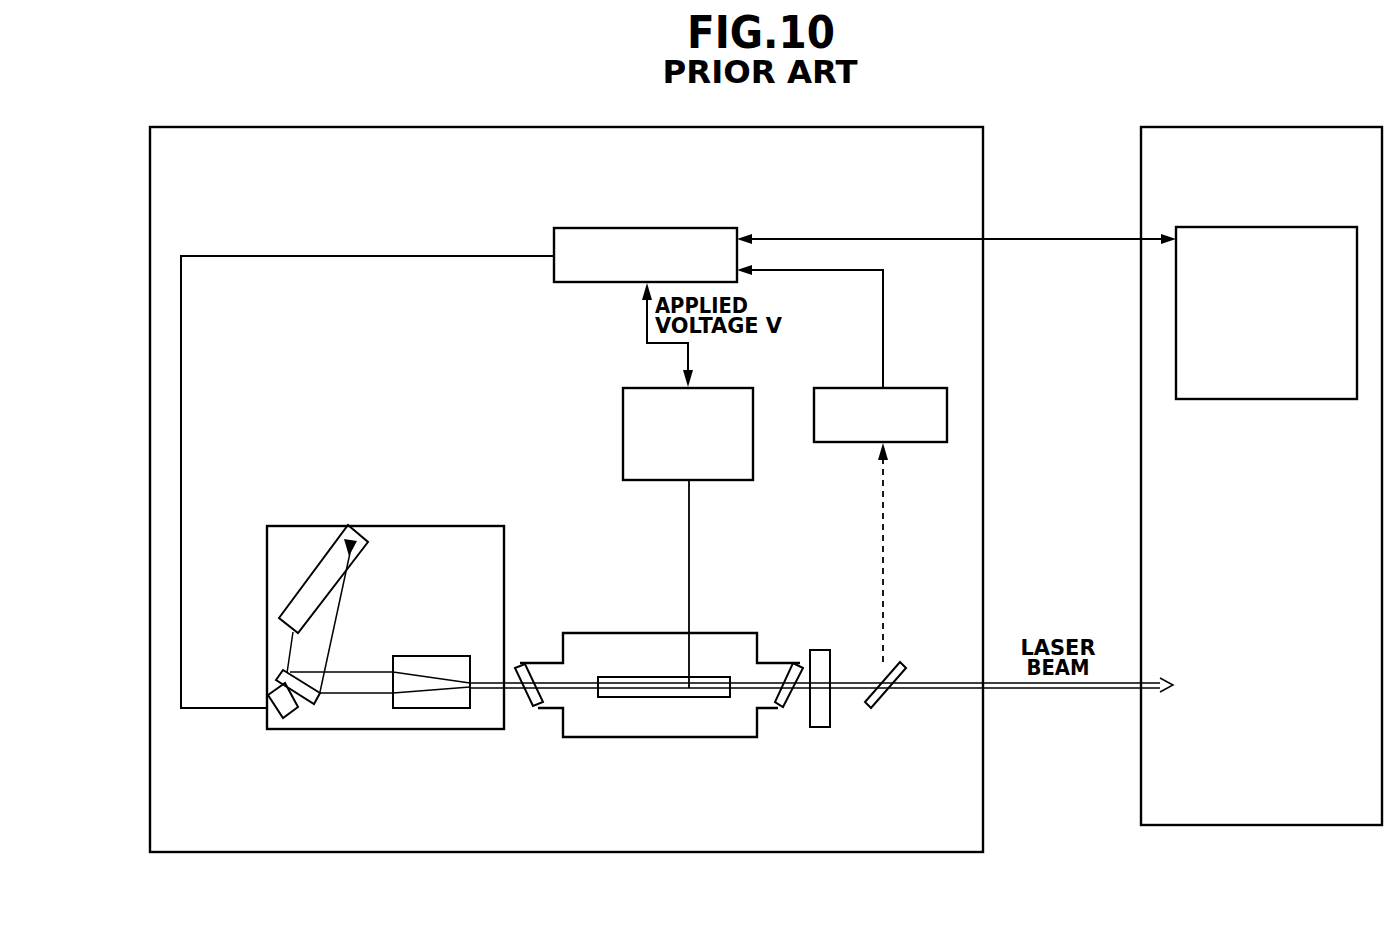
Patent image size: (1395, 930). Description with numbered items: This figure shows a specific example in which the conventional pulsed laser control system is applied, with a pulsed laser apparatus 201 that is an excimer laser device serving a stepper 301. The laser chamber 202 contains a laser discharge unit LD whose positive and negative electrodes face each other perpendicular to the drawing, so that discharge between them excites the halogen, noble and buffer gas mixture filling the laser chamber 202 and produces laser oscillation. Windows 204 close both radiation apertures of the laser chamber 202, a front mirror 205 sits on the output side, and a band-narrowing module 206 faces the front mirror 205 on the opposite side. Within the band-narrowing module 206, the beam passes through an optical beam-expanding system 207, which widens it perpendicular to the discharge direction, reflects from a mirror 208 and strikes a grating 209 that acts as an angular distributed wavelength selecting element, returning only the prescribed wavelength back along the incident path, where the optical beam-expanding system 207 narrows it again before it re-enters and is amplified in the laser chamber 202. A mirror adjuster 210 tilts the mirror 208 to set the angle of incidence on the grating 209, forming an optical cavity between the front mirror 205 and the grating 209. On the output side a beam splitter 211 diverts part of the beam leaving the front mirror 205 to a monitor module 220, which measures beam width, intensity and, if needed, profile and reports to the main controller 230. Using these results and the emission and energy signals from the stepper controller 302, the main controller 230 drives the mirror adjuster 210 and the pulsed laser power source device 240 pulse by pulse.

The pulsed laser apparatus 201 is at (983, 145).
The laser chamber 202 is at (592, 633).
The windows 204 is at (535, 707).
The front mirror 205 is at (822, 727).
The band-narrowing module 206 is at (437, 525).
The optical beam-expanding system 207 is at (425, 710).
The mirror 208 is at (293, 715).
The grating 209 is at (357, 527).
The mirror adjuster 210 is at (307, 713).
The beam splitter 211 is at (880, 702).
The monitor module 220 is at (920, 388).
The main controller 230 is at (643, 227).
The pulsed laser power source device 240 is at (623, 437).
The stepper 301 is at (1140, 209).
The stepper controller 302 is at (1273, 227).
The laser discharge unit LD is at (662, 693).